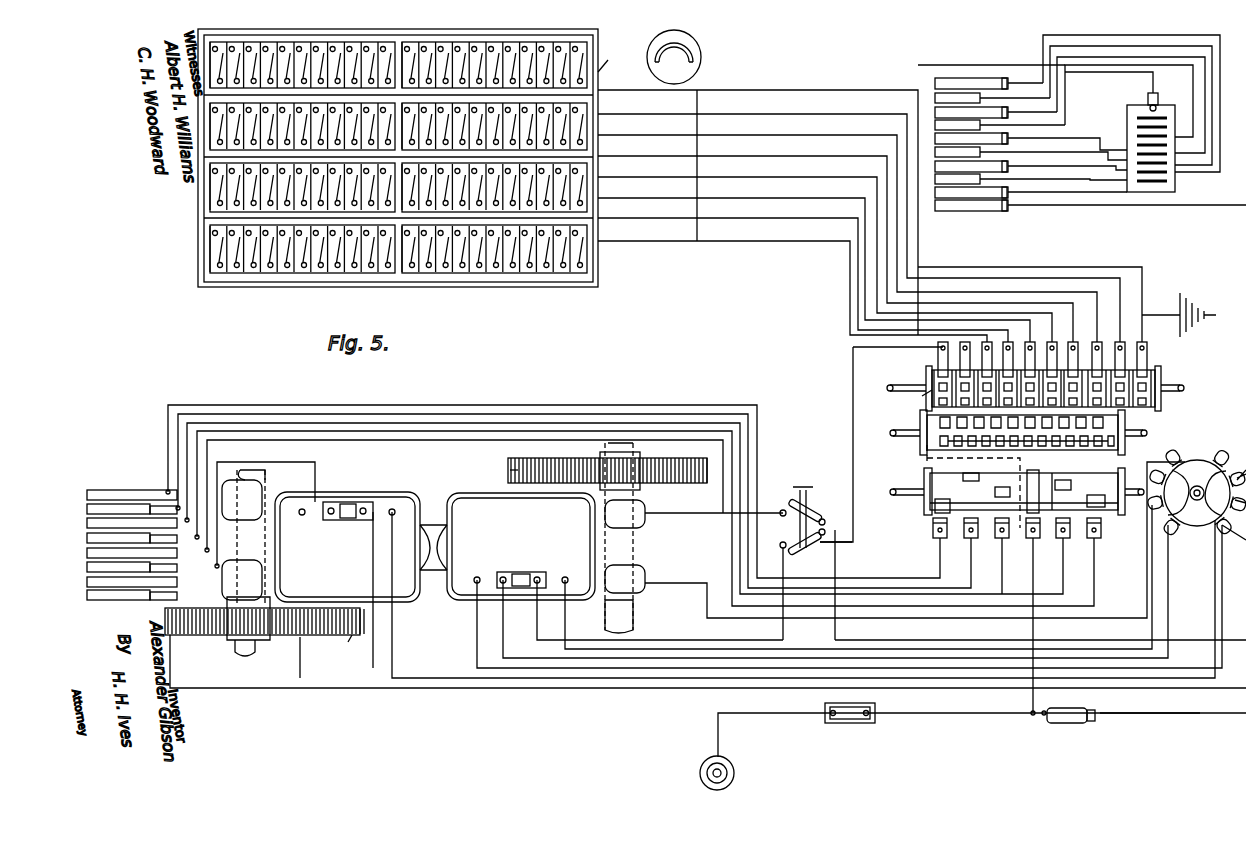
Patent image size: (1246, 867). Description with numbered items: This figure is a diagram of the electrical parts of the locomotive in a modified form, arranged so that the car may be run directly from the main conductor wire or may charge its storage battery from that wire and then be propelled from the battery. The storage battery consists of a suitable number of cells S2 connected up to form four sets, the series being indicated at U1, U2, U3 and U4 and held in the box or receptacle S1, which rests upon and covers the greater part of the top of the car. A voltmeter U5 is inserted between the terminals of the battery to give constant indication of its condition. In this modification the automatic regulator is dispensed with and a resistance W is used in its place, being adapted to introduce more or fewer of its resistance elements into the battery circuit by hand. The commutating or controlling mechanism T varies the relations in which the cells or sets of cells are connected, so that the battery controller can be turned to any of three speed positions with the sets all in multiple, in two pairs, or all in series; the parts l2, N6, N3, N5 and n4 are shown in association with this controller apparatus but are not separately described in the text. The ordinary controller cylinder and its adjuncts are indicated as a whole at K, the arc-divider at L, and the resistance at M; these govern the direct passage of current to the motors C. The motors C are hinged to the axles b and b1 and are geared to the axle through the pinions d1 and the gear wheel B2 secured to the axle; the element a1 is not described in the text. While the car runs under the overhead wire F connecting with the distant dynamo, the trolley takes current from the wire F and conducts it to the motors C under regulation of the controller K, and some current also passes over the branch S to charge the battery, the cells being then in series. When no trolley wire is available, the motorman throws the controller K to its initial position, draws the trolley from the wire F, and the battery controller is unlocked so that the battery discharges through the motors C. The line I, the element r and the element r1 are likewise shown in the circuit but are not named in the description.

The cells S2 is at (252, 270).
The series of cells U1 is at (588, 55).
The box or receptacle S1 is at (607, 59).
The series of cells U2 is at (600, 106).
The series of cells U3 is at (600, 174).
The series of cells U4 is at (600, 240).
The voltmeter U5 is at (685, 57).
The resistance W is at (1090, 123).
The commutating or controlling mechanism T is at (1037, 376).
The drum shaft l2 is at (920, 398).
The arc-divider L is at (1022, 432).
The controller cylinder K is at (1012, 486).
The contact bar N6 is at (1030, 484).
The contact N3 is at (1052, 480).
The contact pieces N5 is at (1020, 493).
The contact springs n4 is at (922, 520).
The resistance M is at (153, 534).
The motors C is at (435, 547).
The gear wheel B2 is at (436, 548).
The armature a1 is at (344, 645).
The axle b1 is at (258, 650).
The pinions d1 is at (505, 465).
The axle b is at (623, 538).
The line wire I is at (778, 713).
The overhead wire F is at (852, 723).
The ground connection r is at (710, 768).
The battery r1 is at (1060, 723).
The circuit branch S is at (1156, 714).